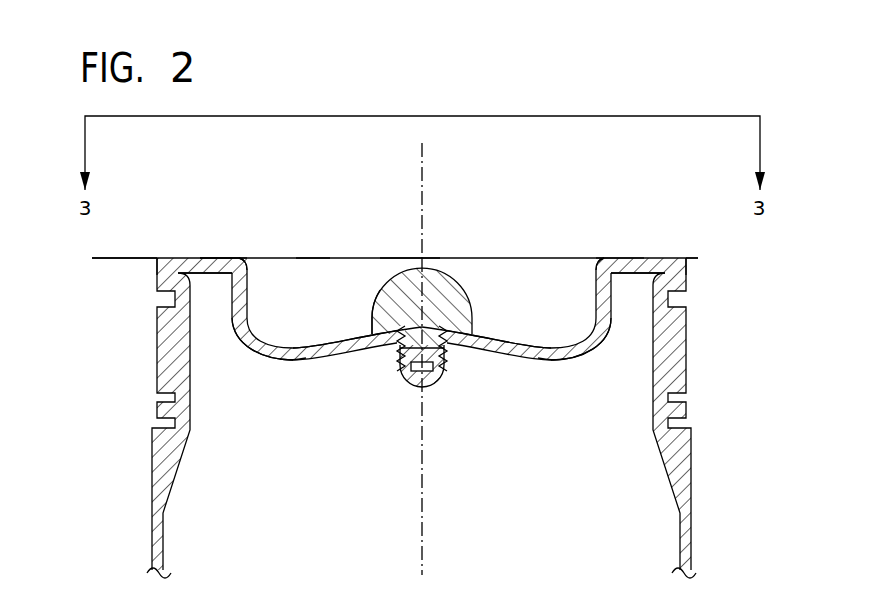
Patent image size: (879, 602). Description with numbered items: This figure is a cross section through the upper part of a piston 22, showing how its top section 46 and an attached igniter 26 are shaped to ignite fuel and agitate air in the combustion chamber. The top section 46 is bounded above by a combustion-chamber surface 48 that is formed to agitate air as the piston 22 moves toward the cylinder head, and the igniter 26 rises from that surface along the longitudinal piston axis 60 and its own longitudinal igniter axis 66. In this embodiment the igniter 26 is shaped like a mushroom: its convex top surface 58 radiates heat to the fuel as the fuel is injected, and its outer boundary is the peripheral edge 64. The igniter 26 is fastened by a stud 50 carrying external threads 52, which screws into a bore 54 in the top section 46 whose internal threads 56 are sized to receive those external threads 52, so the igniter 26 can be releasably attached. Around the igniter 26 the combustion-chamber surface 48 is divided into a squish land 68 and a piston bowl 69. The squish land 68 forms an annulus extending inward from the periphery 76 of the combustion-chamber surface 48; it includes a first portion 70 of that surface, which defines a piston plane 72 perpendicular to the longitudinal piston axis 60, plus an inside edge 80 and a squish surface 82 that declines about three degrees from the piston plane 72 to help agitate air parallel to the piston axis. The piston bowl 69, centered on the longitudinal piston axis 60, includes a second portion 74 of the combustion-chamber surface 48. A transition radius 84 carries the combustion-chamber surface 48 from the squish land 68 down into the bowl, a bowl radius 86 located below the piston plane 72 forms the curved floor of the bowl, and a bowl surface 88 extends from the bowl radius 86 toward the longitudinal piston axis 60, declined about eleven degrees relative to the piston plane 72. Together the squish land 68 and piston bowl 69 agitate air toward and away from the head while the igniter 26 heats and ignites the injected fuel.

The piston 22 is at (565, 177).
The igniter 26 is at (406, 246).
The top section 46 is at (120, 328).
The combustion-chamber surface 48 is at (227, 257).
The stud 50 is at (433, 387).
The external threads 52 is at (427, 350).
The bore 54 is at (402, 360).
The internal threads 56 is at (400, 370).
The top surface 58 is at (390, 277).
The longitudinal piston axis 60 is at (425, 487).
The peripheral edge 64 is at (371, 292).
The longitudinal igniter axis 66 is at (424, 172).
The squish land 68 is at (214, 204).
The piston bowl 69 is at (313, 247).
The first portion 70 is at (178, 257).
The piston plane 72 is at (103, 258).
The second portion 74 is at (297, 238).
The periphery 76 is at (157, 260).
The inside edge 80 is at (247, 258).
The squish surface 82 is at (213, 257).
The transition radius 84 is at (240, 257).
The bowl radius 86 is at (252, 337).
The bowl surface 88 is at (327, 345).